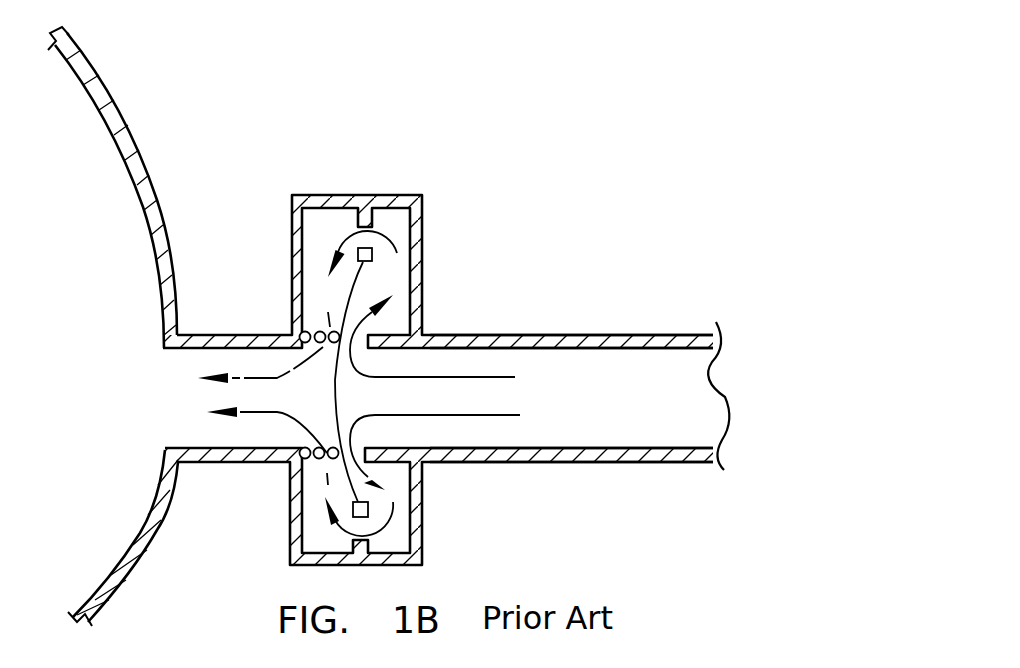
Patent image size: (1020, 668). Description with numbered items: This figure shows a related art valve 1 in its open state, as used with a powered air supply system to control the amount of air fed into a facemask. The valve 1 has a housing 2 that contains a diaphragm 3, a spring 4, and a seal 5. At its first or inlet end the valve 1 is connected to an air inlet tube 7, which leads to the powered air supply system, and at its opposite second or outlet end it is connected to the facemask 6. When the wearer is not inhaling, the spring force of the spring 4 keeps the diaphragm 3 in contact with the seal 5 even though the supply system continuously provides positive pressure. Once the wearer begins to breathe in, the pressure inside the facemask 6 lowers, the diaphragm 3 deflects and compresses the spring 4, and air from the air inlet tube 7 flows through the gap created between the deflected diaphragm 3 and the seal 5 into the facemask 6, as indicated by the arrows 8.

The valve 1 is at (422, 209).
The housing 2 is at (422, 240).
The diaphragm 3 is at (347, 297).
The spring 4 is at (317, 333).
The seal 5 is at (396, 312).
The facemask 6 is at (136, 132).
The air inlet tube 7 is at (648, 335).
The arrows 8 is at (490, 417).